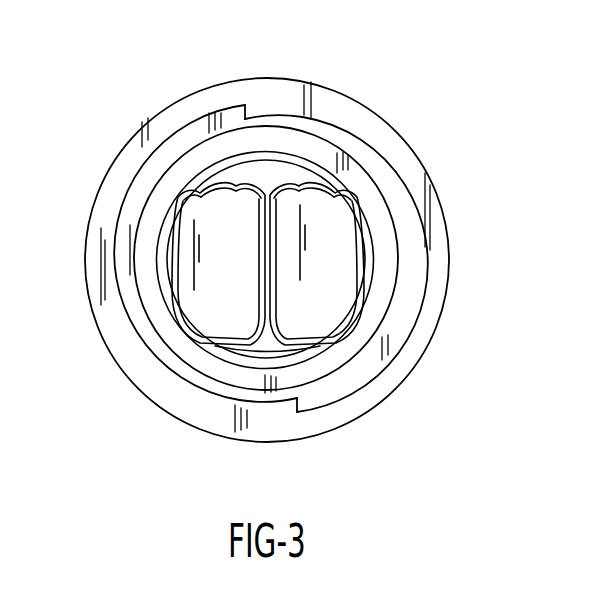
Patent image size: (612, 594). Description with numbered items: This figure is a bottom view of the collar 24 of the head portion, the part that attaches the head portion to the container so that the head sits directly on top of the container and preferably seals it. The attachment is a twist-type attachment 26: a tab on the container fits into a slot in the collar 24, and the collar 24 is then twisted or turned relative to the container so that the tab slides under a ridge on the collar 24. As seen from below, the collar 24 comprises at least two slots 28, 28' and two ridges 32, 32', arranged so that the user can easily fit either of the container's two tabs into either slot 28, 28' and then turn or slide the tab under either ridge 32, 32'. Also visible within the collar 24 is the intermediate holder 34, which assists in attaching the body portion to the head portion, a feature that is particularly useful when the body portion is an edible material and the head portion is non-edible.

The collar 24 is at (452, 133).
The twist-type attachment 26 is at (148, 372).
The slot 28 is at (353, 286).
The slot 28' is at (193, 222).
The ridge 32 is at (295, 64).
The ridge 32' is at (246, 452).
The intermediate holder 34 is at (175, 177).